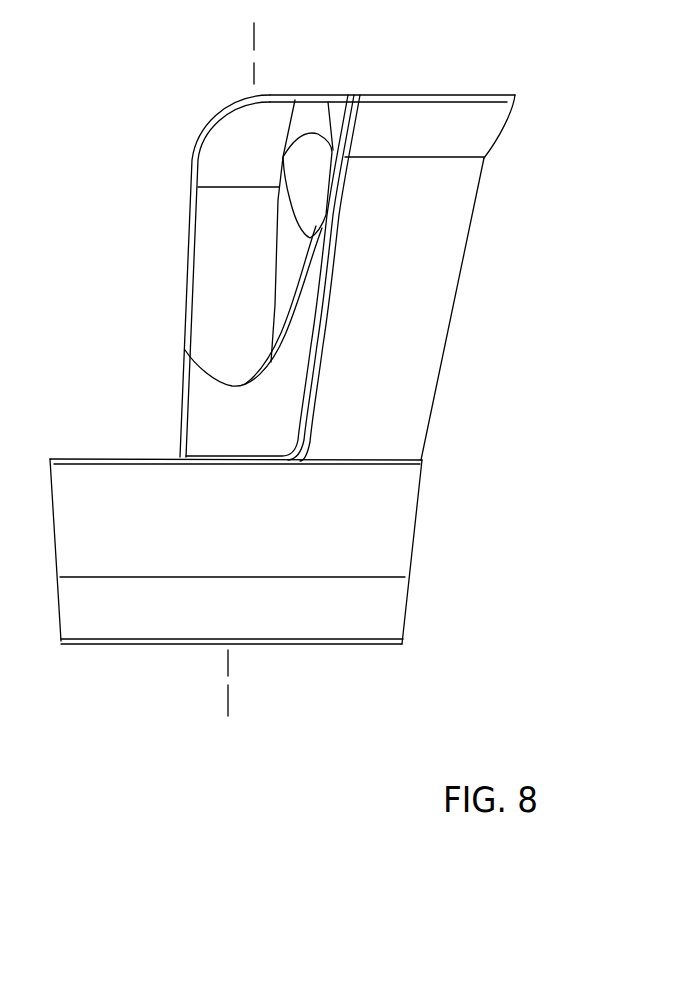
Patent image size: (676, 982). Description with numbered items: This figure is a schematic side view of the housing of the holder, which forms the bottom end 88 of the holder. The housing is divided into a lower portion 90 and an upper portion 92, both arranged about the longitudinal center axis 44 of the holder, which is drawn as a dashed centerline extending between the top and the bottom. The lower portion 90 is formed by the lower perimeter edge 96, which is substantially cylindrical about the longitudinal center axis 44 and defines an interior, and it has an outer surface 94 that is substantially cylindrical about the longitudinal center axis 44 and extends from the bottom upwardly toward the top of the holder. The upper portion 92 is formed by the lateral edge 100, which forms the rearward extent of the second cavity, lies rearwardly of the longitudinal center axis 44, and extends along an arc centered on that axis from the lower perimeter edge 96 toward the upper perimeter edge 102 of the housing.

The longitudinal center axis 44 is at (256, 34).
The bottom end 88 is at (142, 645).
The lower portion 90 is at (420, 558).
The upper portion 92 is at (470, 300).
The outer surface 94 is at (370, 534).
The lower perimeter edge 96 is at (100, 458).
The lateral edge 100 is at (398, 375).
The upper perimeter edge 102 is at (424, 97).